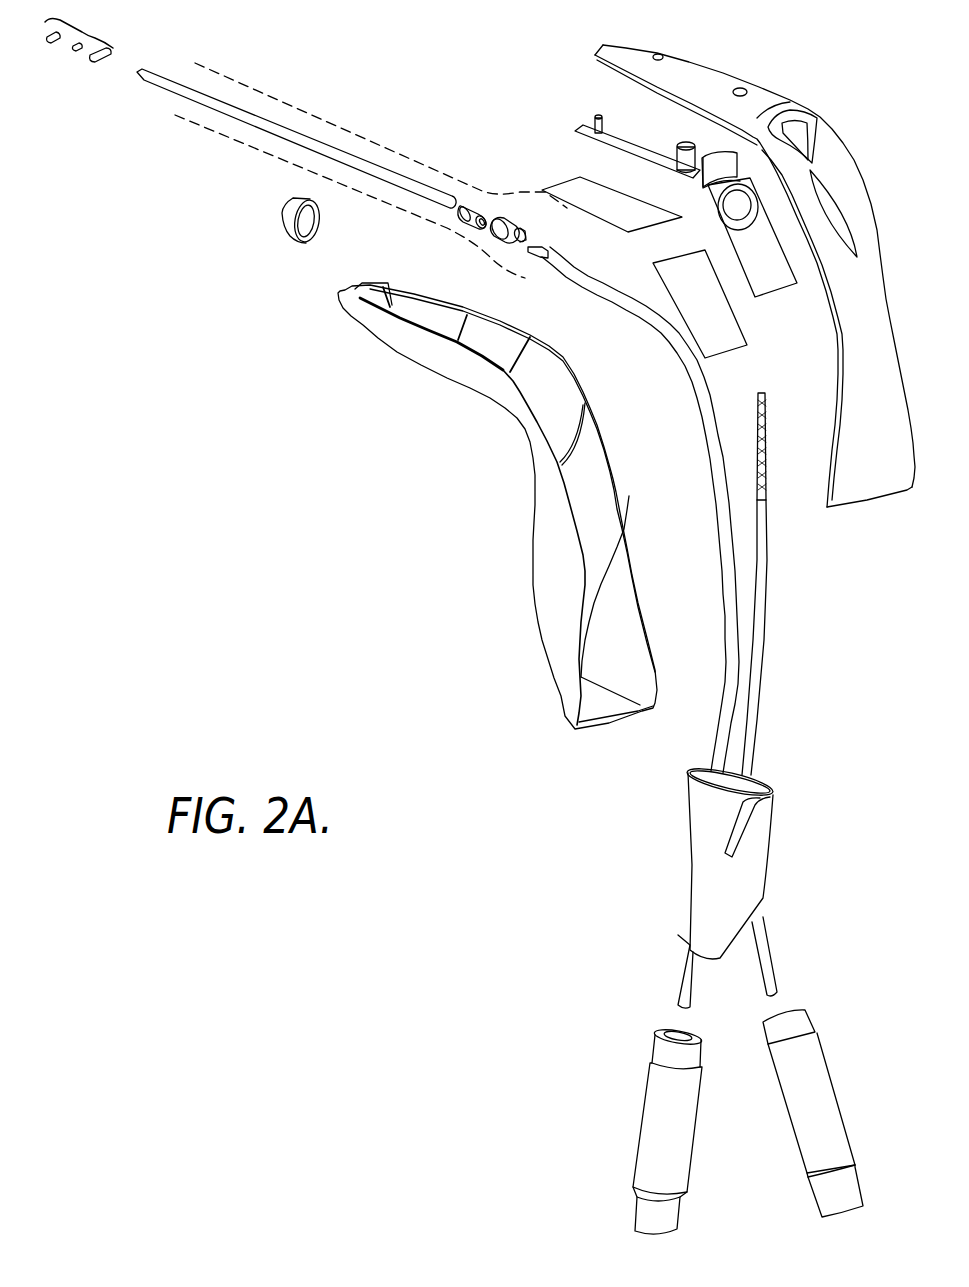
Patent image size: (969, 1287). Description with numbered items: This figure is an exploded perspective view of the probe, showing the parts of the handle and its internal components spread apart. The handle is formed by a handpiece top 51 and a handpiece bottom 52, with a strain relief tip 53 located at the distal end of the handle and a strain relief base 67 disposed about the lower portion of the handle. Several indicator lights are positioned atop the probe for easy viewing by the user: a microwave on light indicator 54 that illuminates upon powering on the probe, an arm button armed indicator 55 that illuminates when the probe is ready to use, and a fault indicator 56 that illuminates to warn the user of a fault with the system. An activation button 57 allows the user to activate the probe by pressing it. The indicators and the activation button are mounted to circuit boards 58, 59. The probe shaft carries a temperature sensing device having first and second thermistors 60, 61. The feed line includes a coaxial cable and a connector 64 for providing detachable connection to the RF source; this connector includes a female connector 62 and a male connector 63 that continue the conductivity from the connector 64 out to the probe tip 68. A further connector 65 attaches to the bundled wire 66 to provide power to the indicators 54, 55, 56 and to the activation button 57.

The handpiece top 51 is at (864, 510).
The handpiece bottom 52 is at (530, 543).
The strain relief tip 53 is at (282, 230).
The microwave on light indicator 54 is at (702, 183).
The arm button armed indicator 55 is at (677, 143).
The fault indicator 56 is at (595, 118).
The activation button 57 is at (732, 207).
The circuit board 58 is at (607, 218).
The circuit board 59 is at (737, 318).
The first thermistor 60 is at (278, 92).
The second thermistor 61 is at (232, 147).
The female connector 62 is at (492, 233).
The male connector 63 is at (458, 217).
The connector 64 is at (640, 1140).
The connector 65 is at (796, 1148).
The bundled wire 66 is at (774, 667).
The strain relief base 67 is at (690, 850).
The probe tip 68 is at (79, 33).